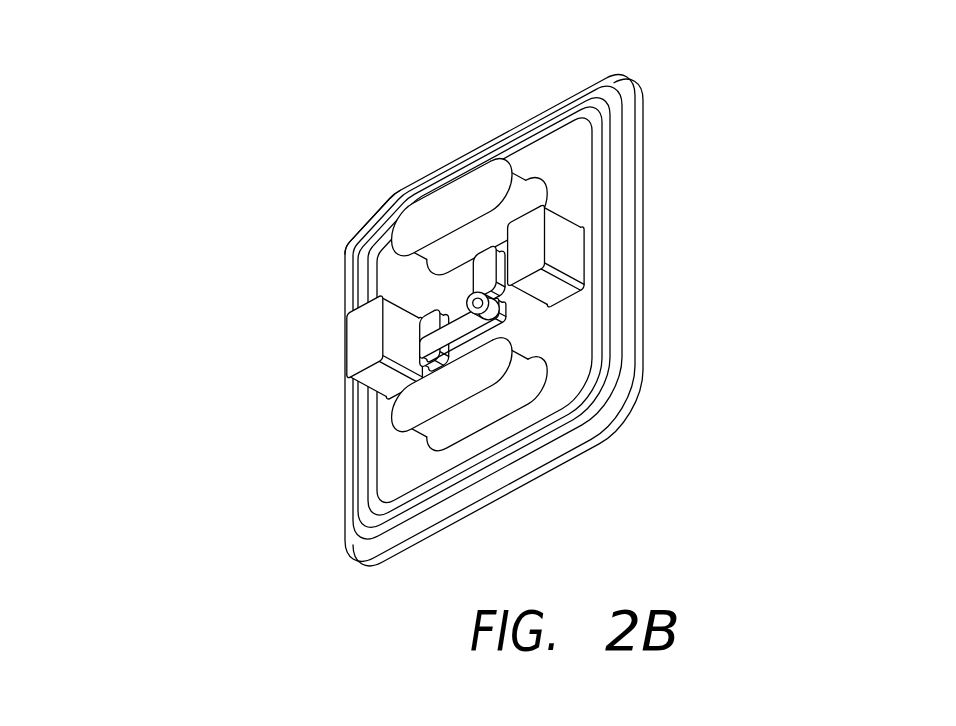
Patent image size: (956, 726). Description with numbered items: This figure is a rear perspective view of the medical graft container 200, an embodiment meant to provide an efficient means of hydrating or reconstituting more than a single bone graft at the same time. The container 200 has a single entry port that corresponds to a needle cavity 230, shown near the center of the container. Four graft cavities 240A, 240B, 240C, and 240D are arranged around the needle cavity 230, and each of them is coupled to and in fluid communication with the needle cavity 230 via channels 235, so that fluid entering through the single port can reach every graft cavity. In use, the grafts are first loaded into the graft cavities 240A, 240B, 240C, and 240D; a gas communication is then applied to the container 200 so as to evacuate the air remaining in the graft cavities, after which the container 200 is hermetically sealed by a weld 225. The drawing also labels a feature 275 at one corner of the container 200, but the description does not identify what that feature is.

The medical graft container 200 is at (196, 150).
The weld 225 is at (605, 352).
The chamfered corner 275 is at (367, 226).
The graft cavity 240A is at (455, 192).
The graft cavity 240B is at (357, 348).
The graft cavity 240C is at (570, 248).
The graft cavity 240D is at (485, 415).
The needle cavity 230 is at (470, 302).
The channels 235 is at (488, 326).